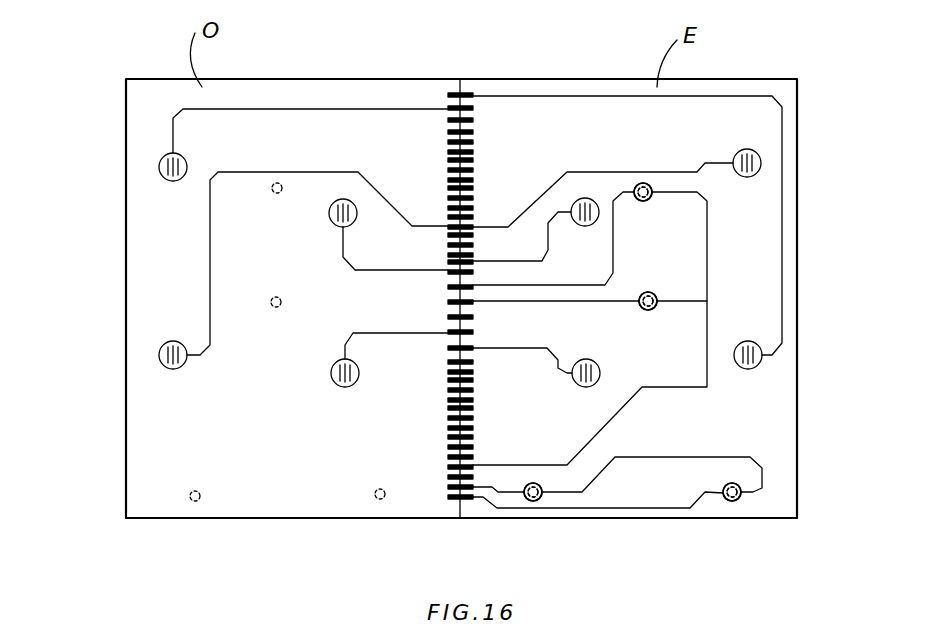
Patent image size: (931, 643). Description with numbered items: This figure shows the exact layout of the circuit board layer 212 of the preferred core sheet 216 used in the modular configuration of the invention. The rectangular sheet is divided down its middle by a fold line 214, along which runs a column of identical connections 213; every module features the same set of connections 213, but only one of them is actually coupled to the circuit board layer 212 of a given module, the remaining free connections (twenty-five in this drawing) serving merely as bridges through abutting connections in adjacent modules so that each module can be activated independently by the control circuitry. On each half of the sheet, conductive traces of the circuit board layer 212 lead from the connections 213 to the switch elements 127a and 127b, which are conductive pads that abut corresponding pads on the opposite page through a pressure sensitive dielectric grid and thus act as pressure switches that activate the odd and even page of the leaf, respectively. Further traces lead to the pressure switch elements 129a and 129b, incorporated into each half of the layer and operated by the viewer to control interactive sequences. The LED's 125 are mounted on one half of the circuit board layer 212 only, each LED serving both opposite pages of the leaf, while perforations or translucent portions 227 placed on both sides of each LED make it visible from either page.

The core sheet 216 is at (320, 75).
The fold line 214 is at (463, 86).
The connections 213 is at (474, 121).
The circuit board layer 212 is at (205, 263).
The perforations or translucent portions 227 is at (282, 182).
The LED's 125 is at (652, 186).
The switch element 127a is at (158, 165).
The switch element 127b is at (158, 357).
The pressure switch element 129a is at (335, 226).
The pressure switch element 129b is at (334, 386).